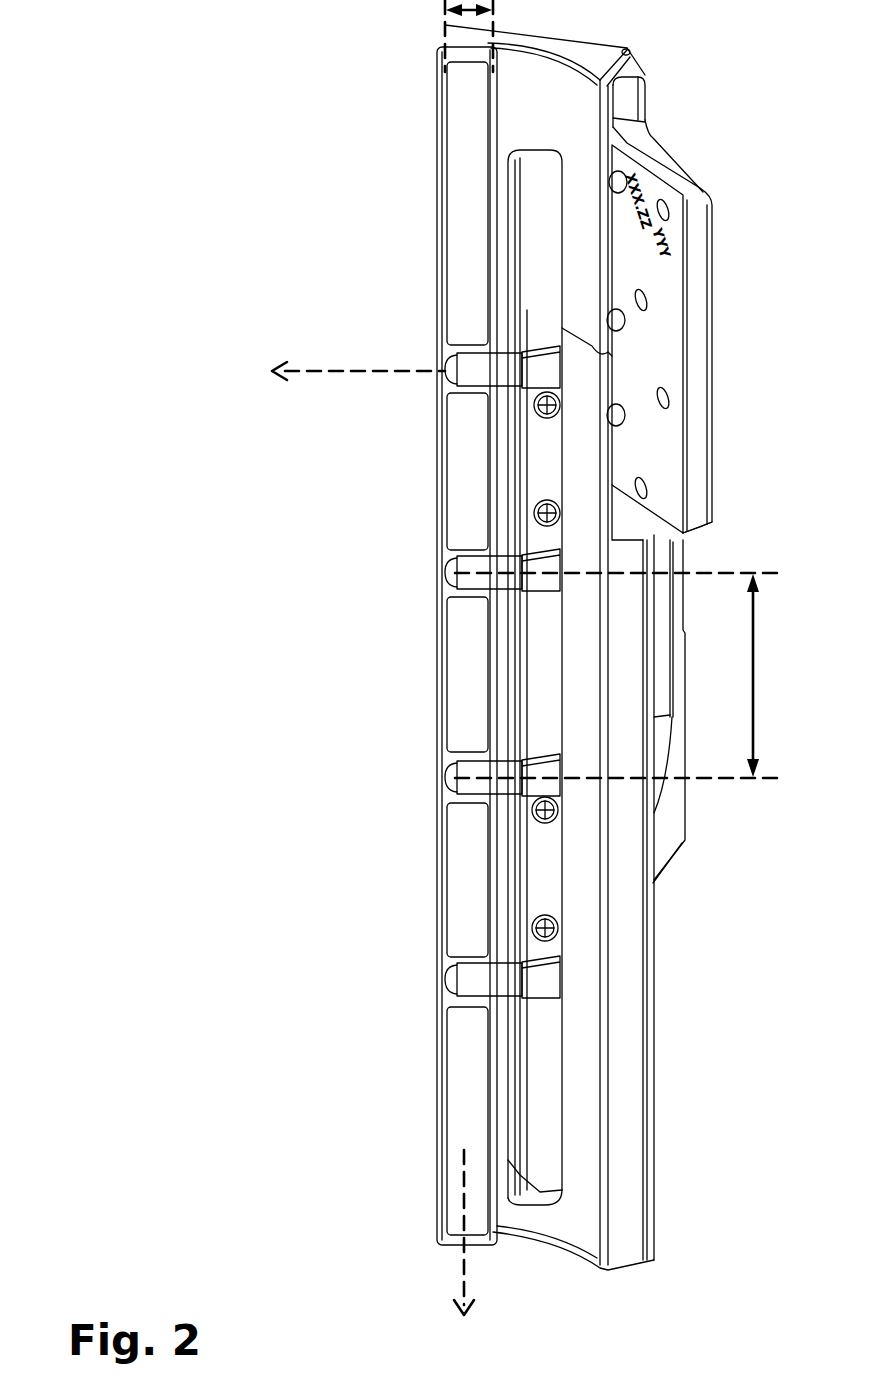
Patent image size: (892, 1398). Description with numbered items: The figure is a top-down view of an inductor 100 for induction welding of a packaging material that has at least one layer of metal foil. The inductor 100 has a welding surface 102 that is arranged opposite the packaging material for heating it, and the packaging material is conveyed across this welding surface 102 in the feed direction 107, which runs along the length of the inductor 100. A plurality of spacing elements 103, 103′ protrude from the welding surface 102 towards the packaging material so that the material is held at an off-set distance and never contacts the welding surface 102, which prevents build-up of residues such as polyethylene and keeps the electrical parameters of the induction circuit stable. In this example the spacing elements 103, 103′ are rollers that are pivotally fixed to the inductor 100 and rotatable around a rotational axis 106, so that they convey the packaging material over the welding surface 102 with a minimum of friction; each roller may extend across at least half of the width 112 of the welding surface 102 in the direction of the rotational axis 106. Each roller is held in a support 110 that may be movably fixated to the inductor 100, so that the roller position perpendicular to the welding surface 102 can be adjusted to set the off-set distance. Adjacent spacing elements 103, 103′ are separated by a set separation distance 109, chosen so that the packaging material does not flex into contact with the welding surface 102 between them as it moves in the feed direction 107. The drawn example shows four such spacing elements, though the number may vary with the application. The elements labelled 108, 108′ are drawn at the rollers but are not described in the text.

The inductor 100 is at (248, 60).
The welding surface 102 is at (465, 680).
The spacing element 103 is at (475, 352).
The spacing element 103′ is at (470, 557).
The rotational axis 106 is at (330, 372).
The feed direction 107 is at (464, 1282).
The guide block 108 is at (445, 367).
The guide block 108′ is at (445, 578).
The separation distance 109 is at (633, 675).
The support 110 is at (537, 365).
The width 112 is at (460, 25).